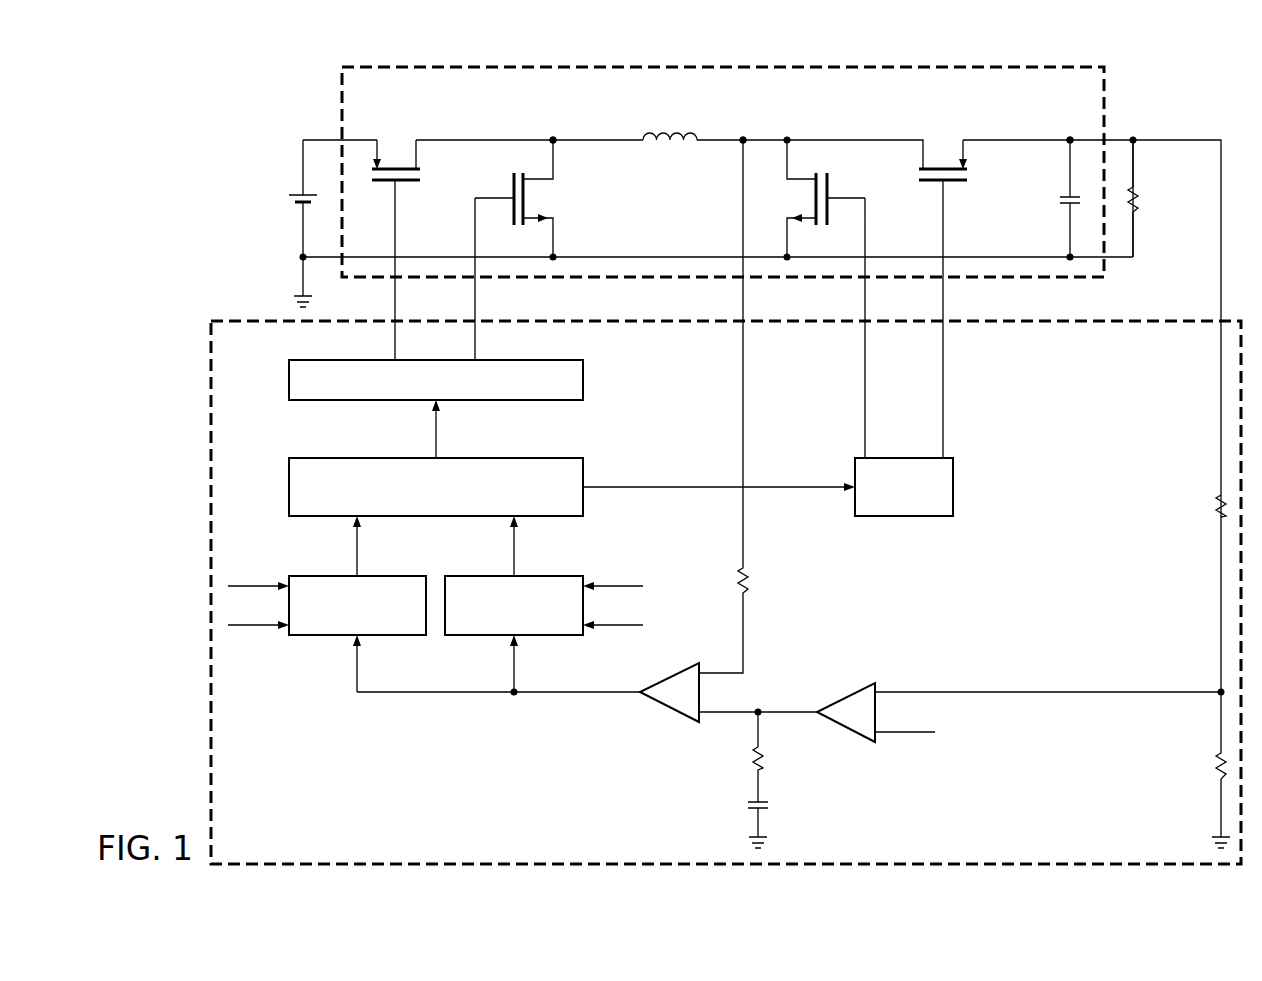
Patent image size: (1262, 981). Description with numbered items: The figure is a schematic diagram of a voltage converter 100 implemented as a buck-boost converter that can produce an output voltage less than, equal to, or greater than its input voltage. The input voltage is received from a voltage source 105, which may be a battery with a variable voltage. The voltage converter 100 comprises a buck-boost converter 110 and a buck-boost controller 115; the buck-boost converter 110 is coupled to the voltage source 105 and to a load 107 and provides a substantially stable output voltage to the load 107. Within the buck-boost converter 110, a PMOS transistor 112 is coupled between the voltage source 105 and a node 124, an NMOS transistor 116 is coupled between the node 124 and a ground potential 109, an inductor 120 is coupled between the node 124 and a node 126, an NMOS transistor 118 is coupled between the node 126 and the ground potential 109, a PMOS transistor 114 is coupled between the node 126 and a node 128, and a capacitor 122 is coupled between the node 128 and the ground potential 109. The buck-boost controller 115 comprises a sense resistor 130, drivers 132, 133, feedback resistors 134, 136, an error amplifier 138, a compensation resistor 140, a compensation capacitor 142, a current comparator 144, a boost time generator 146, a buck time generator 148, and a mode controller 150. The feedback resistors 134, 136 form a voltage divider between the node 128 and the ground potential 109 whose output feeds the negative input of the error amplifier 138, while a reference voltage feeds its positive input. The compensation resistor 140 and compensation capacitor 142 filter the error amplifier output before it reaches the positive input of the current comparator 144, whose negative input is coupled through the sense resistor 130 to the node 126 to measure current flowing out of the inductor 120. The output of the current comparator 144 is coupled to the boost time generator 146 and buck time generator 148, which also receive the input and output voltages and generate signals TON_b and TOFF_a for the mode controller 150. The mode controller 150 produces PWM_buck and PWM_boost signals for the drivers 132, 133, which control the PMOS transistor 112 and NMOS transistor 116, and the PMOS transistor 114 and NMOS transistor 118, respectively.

The voltage converter 100 is at (172, 293).
The voltage source 105 is at (288, 196).
The load 107 is at (1138, 200).
The ground potential 109 is at (290, 300).
The buck-boost converter 110 is at (334, 106).
The PMOS transistor 112 is at (383, 183).
The PMOS transistor 114 is at (955, 183).
The buck-boost controller 115 is at (202, 410).
The NMOS transistor 116 is at (510, 188).
The NMOS transistor 118 is at (830, 188).
The inductor 120 is at (672, 128).
The capacitor 122 is at (1060, 198).
The node 124 is at (553, 138).
The node 126 is at (743, 138).
The node 128 is at (1068, 138).
The sense resistor 130 is at (752, 585).
The driver 132 is at (289, 378).
The driver 133 is at (905, 517).
The feedback resistor 134 is at (1216, 502).
The feedback resistor 136 is at (1216, 770).
The error amplifier 138 is at (845, 728).
The compensation resistor 140 is at (752, 757).
The compensation capacitor 142 is at (765, 805).
The current comparator 144 is at (668, 712).
The boost time generator 146 is at (484, 635).
The buck time generator 148 is at (328, 635).
The mode controller 150 is at (289, 478).